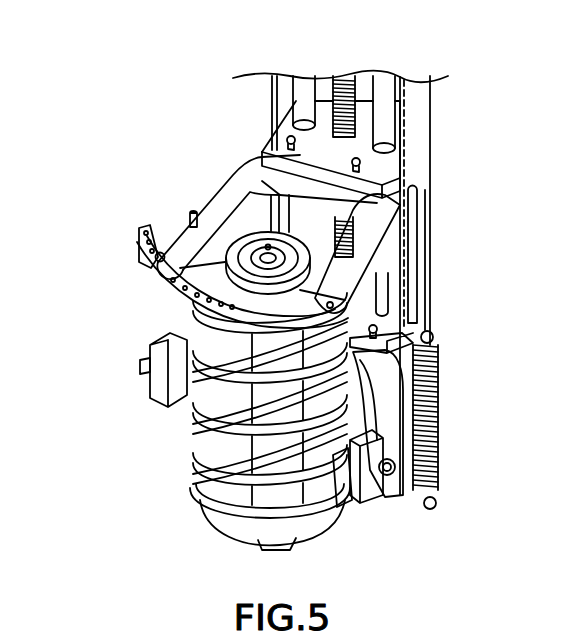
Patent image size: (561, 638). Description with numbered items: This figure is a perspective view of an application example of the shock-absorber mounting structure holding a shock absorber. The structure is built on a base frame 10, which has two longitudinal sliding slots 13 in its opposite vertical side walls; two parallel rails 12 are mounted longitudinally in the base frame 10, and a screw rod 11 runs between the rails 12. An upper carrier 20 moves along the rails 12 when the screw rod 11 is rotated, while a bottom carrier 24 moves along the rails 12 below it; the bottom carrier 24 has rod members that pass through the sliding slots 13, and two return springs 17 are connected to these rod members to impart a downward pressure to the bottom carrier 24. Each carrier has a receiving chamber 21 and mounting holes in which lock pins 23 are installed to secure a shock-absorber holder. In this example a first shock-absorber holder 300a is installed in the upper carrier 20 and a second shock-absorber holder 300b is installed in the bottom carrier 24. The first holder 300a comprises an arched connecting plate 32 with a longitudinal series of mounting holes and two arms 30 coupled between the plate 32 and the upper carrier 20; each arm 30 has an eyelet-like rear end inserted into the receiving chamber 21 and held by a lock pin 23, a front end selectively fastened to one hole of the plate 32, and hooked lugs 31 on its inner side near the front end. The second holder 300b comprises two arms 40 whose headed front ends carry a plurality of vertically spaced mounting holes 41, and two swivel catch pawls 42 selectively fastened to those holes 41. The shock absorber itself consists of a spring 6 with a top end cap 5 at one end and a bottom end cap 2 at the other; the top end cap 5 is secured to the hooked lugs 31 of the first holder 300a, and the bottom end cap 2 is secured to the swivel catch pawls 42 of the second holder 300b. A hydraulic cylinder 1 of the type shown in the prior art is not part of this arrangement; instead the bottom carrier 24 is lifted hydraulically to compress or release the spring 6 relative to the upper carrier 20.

The hydraulic cylinder 1 is at (263, 468).
The bottom end cap 2 is at (297, 542).
The top end cap 5 is at (188, 322).
The spring 6 is at (200, 450).
The base frame 10 is at (417, 100).
The screw rod 11 is at (344, 80).
The rails 12 is at (304, 85).
The sliding slots 13 is at (415, 243).
The return springs 17 is at (438, 412).
The upper carrier 20 is at (385, 163).
The receiving chamber 21 is at (417, 190).
The lock pins 23 is at (280, 138).
The bottom carrier 24 is at (390, 327).
The arms 30 is at (228, 172).
The hooked lugs 31 is at (227, 228).
The arched connecting plate 32 is at (138, 250).
The arms 40 is at (402, 382).
The mounting holes 41 is at (397, 453).
The swivel catch pawls 42 is at (337, 483).
The first shock-absorber holder 300a is at (191, 182).
The second shock-absorber holder 300b is at (153, 392).